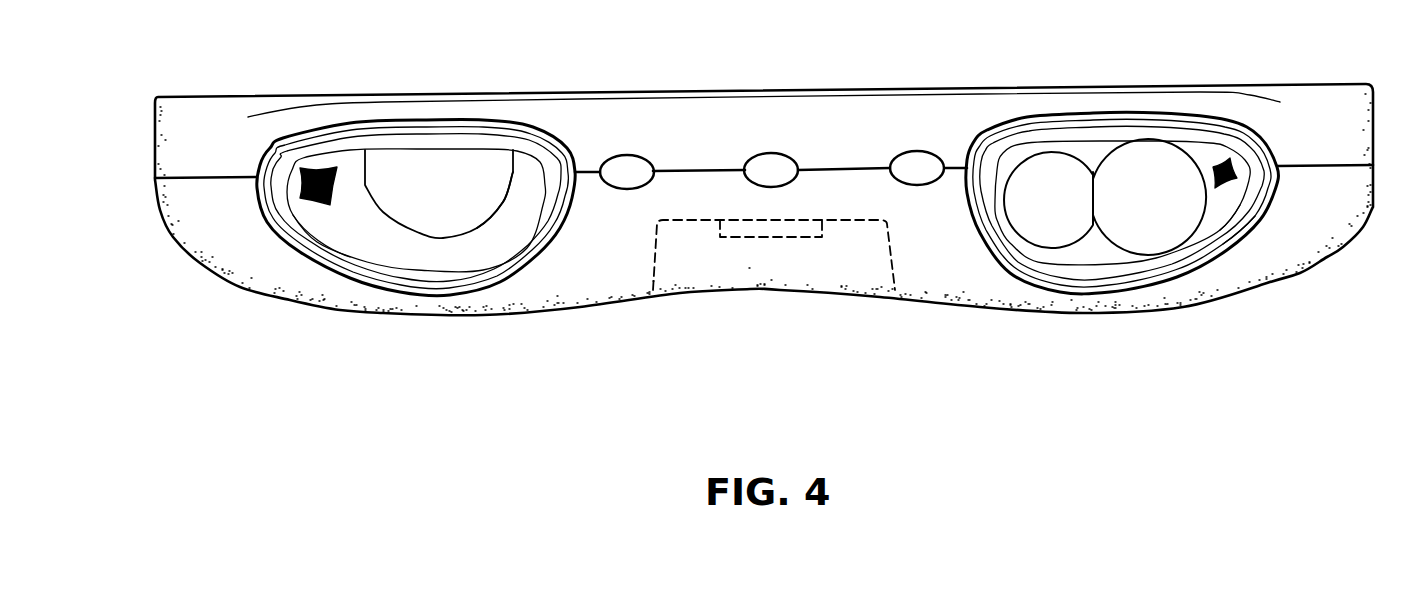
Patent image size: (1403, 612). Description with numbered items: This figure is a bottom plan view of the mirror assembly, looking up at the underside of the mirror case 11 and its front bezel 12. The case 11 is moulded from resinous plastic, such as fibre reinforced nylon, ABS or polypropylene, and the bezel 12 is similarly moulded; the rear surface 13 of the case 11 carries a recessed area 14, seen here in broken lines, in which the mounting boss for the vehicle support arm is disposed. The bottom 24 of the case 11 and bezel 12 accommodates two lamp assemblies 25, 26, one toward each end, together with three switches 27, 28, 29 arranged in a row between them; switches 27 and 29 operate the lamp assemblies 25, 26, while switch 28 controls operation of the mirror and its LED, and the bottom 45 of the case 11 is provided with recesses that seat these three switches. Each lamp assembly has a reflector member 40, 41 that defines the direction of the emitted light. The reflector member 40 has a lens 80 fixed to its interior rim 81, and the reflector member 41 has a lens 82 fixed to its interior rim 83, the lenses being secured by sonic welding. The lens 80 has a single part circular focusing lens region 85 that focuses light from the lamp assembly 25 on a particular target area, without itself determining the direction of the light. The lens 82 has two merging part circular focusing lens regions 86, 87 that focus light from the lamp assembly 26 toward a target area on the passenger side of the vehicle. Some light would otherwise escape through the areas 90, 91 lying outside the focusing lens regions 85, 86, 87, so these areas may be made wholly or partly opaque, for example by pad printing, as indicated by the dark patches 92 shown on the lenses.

The mirror case 11 is at (1257, 267).
The front bezel 12 is at (1328, 95).
The rear surface 13 is at (1167, 310).
The recessed area 14 is at (862, 270).
The bottom 24 is at (612, 270).
The lamp assembly 25 is at (412, 128).
The lamp assembly 26 is at (1138, 133).
The switch 27 is at (637, 170).
The switch 28 is at (773, 167).
The switch 29 is at (918, 167).
The reflector member 40 is at (512, 142).
The reflector member 41 is at (1235, 138).
The bottom 45 is at (840, 205).
The lens 80 is at (428, 250).
The interior rim 81 is at (378, 268).
The lens 82 is at (1218, 203).
The interior rim 83 is at (1233, 197).
The focusing lens region 85 is at (480, 227).
The focusing lens region 86 is at (1060, 247).
The focusing lens region 87 is at (1120, 247).
The area outside focusing lens region 90 is at (347, 220).
The area outside focusing lens regions 91 is at (1200, 160).
The opaque part 92 is at (317, 200).